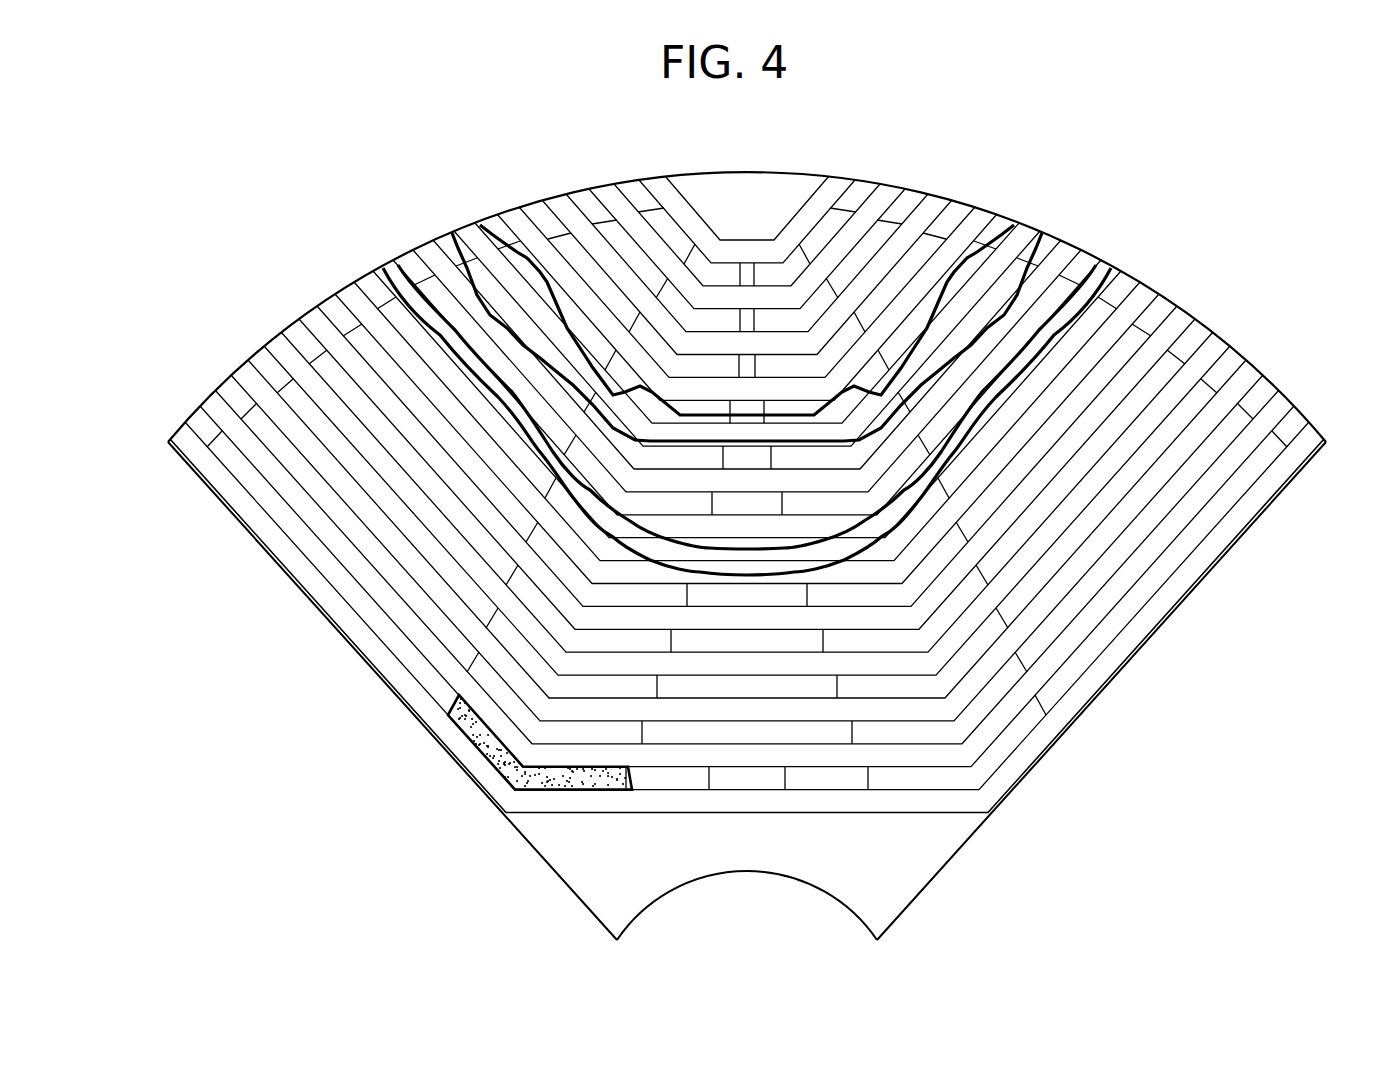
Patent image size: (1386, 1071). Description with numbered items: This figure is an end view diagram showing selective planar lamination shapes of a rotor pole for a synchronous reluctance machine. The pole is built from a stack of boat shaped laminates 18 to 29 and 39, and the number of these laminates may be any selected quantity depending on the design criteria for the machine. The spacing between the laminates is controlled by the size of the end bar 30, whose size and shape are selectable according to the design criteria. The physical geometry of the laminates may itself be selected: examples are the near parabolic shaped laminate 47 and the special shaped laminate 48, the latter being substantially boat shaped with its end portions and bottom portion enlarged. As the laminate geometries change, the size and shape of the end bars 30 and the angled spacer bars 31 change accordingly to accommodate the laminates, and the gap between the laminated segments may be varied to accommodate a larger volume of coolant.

The boat shaped laminate 18 is at (178, 432).
The boat shaped laminate 29 is at (602, 186).
The end bar 30 is at (1318, 433).
The angled spacer bar 31 is at (483, 753).
The boat shaped laminate 39 is at (650, 177).
The near parabolic shaped laminate 47 is at (1118, 268).
The special shaped laminate 48 is at (1025, 226).